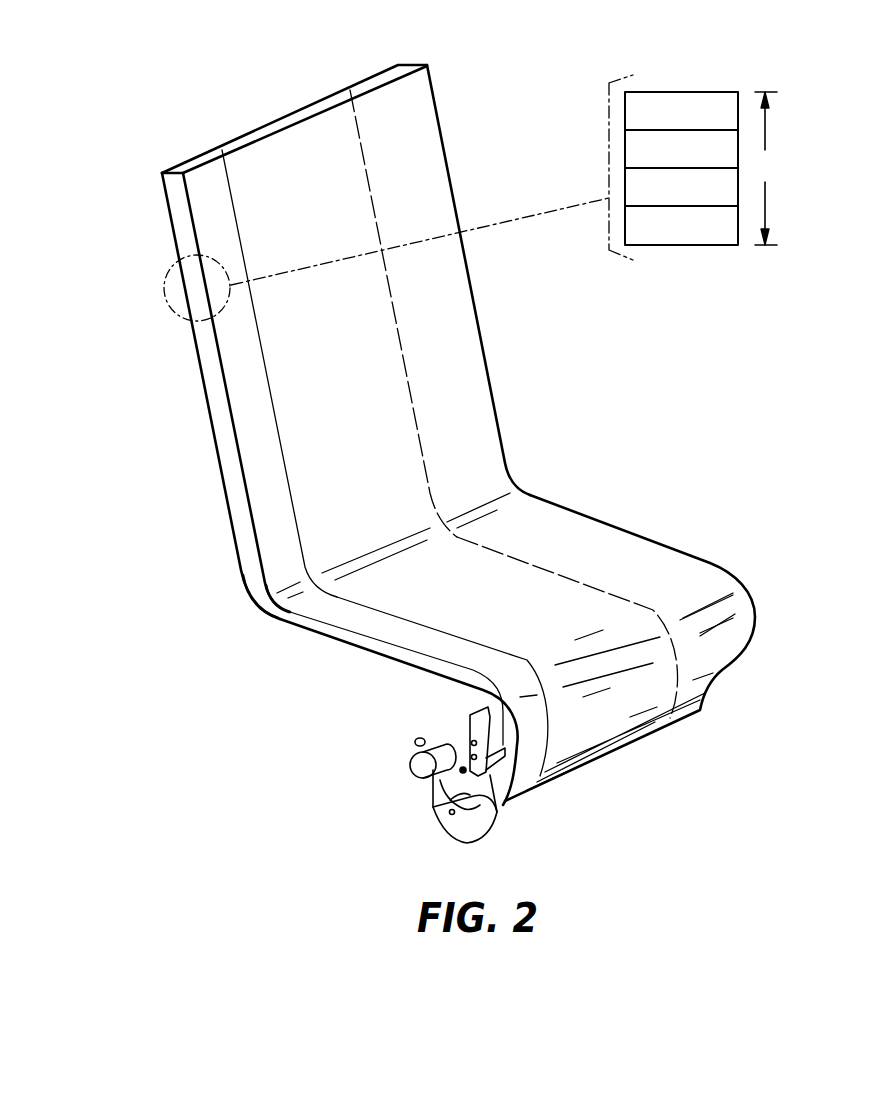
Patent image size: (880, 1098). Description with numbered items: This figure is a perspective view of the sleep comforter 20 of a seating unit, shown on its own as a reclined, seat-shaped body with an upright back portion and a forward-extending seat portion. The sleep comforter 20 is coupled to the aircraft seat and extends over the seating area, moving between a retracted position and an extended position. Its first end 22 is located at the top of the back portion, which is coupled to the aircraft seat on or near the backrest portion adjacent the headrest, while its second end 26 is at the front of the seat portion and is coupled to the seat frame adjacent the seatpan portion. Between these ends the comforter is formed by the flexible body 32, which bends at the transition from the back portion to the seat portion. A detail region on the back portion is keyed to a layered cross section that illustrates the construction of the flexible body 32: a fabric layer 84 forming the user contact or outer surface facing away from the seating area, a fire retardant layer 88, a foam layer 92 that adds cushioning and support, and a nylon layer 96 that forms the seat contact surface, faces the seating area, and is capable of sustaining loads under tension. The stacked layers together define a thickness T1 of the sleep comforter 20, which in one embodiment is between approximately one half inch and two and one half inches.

The sleep comforter 20 is at (466, 106).
The first end 22 is at (178, 180).
The second end 26 is at (588, 728).
The flexible body 32 is at (283, 620).
The fabric layer 84 is at (692, 124).
The fire retardant layer 88 is at (692, 162).
The foam layer 92 is at (692, 200).
The nylon layer 96 is at (692, 238).
The thickness T1 is at (765, 168).